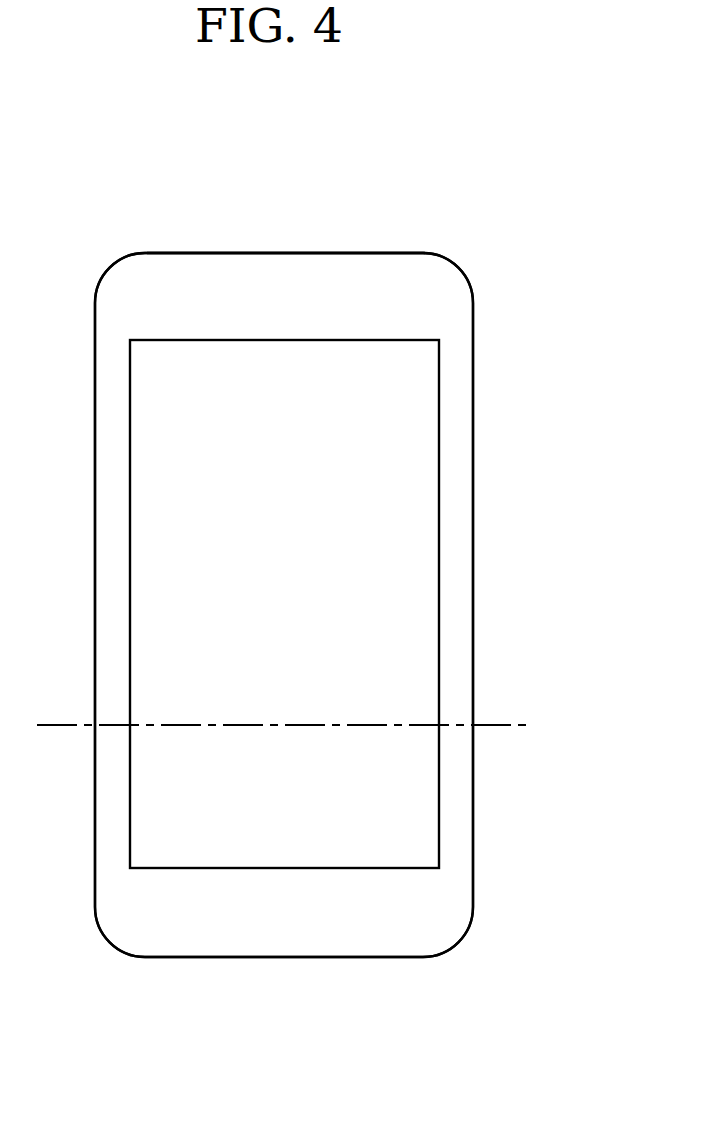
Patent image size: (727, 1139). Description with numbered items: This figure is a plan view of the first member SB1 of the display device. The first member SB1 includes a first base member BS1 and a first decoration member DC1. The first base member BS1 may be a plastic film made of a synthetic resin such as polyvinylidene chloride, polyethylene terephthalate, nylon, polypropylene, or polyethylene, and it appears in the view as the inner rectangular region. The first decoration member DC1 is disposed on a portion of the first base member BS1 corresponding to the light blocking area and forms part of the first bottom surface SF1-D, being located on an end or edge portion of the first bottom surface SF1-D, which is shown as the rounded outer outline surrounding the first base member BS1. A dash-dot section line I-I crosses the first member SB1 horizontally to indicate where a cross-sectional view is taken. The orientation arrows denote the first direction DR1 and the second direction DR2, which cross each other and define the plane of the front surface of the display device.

The first member SB1 is at (397, 192).
The first decoration member DC1 is at (453, 291).
The first bottom surface SF1-D is at (245, 276).
The first base member BS1 is at (404, 483).
The line I- I is at (51, 727).
The first direction DR1 is at (563, 1091).
The second direction DR2 is at (563, 1091).